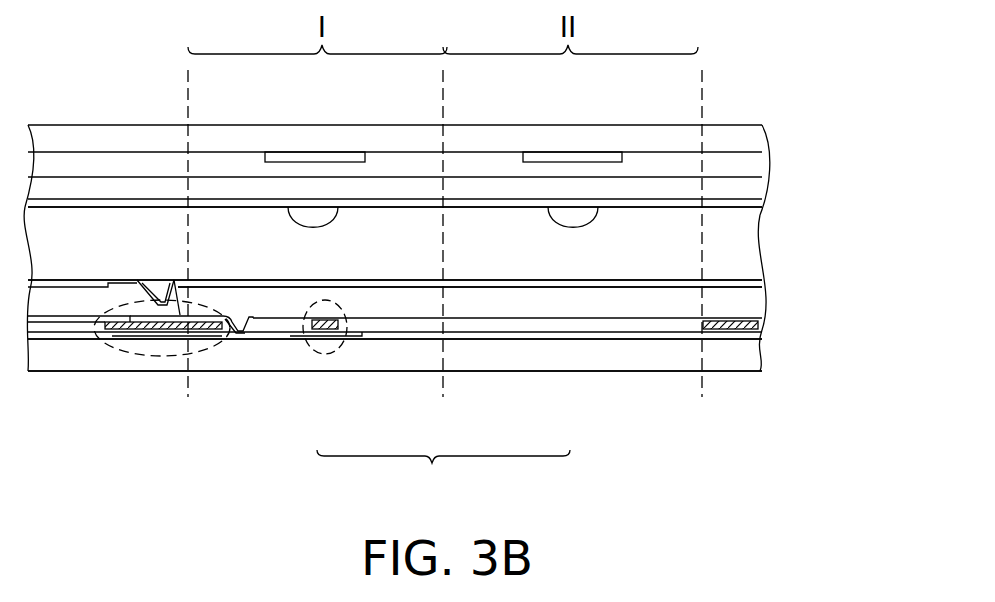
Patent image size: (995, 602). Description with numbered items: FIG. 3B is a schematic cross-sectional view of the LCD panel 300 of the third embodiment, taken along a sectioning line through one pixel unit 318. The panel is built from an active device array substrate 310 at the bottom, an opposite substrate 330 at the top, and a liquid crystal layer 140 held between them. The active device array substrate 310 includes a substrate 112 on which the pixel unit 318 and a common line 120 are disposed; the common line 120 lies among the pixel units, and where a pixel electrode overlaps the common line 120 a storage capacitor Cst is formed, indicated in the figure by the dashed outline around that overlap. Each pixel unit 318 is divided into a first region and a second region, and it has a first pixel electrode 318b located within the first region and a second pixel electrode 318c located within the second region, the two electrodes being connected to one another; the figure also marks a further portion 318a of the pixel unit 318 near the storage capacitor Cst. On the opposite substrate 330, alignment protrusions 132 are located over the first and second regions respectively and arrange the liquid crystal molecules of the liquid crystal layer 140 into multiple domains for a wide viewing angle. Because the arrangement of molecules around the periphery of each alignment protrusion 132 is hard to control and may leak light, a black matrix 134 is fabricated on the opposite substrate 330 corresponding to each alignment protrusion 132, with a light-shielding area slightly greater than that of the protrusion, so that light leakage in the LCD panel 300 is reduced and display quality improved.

The opposite substrate 330 is at (783, 135).
The liquid crystal layer 140 is at (728, 243).
The black matrix 134 is at (314, 152).
The alignment protrusion 132 is at (330, 217).
The active device array substrate 310 is at (725, 382).
The substrate 112 is at (748, 355).
The common line 120 is at (130, 331).
The storage capacitor Cst is at (207, 345).
The first portion of protective layer 318a is at (335, 353).
The first pixel electrode 318b is at (397, 283).
The second pixel electrode 318c is at (533, 283).
The pixel unit 318 is at (443, 474).
The LCD panel 300 is at (786, 512).